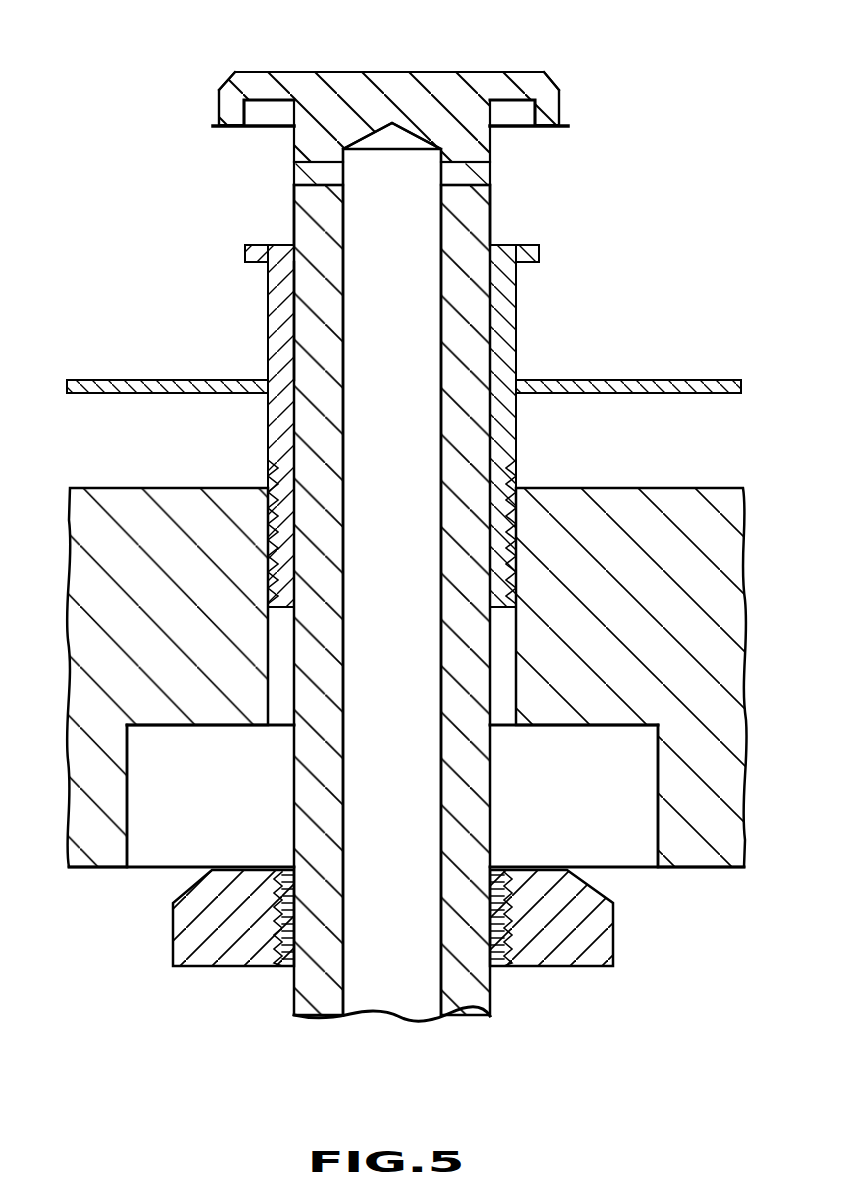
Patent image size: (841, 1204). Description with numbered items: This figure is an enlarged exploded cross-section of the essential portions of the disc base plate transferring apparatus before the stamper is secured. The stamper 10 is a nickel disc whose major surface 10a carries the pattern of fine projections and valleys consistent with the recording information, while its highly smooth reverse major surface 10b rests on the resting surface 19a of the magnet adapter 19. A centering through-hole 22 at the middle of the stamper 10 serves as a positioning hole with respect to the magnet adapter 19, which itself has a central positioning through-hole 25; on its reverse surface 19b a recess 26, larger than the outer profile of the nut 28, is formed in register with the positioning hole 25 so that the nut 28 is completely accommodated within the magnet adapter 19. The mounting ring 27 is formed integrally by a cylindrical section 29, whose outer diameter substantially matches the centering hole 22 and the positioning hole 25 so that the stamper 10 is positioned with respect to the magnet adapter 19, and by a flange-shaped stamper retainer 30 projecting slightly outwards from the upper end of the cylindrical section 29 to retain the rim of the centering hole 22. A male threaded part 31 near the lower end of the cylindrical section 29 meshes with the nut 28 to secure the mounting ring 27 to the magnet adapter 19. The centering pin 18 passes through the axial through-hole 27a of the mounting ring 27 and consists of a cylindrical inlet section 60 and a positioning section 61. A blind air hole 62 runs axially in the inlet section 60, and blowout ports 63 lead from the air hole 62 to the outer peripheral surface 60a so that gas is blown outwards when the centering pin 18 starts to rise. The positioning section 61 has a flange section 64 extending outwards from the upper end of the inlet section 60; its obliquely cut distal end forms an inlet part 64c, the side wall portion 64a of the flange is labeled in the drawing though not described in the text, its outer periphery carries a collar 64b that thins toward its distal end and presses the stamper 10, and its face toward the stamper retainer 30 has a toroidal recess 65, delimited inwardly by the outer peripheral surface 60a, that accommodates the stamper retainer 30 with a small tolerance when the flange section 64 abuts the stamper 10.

The stamper 10 is at (122, 394).
The major surface 10a is at (132, 380).
The reverse major surface 10b is at (160, 394).
The centering pin 18 is at (417, 90).
The magnet adapter 19 is at (637, 487).
The resting surface 19a is at (102, 488).
The reverse surface 19b is at (100, 870).
The centering through-hole 22 is at (270, 402).
The positioning through-hole 25 is at (510, 718).
The recess 26 is at (657, 823).
The mounting ring 27 is at (607, 270).
The axial through-hole 27a is at (293, 298).
The nut 28 is at (568, 970).
The cylindrical section 29 is at (516, 313).
The stamper retainer 30 is at (537, 255).
The male threaded part 31 is at (268, 510).
The inlet section 60 is at (300, 800).
The outer peripheral surface 60a is at (492, 222).
The positioning section 61 is at (363, 72).
The air hole 62 is at (348, 1000).
The blowout ports 63 is at (293, 180).
The flange section 64 is at (265, 80).
The cap side wall 64a is at (218, 98).
The collar 64b is at (212, 126).
The inlet part 64c is at (232, 84).
The toroidal recess 65 is at (250, 122).